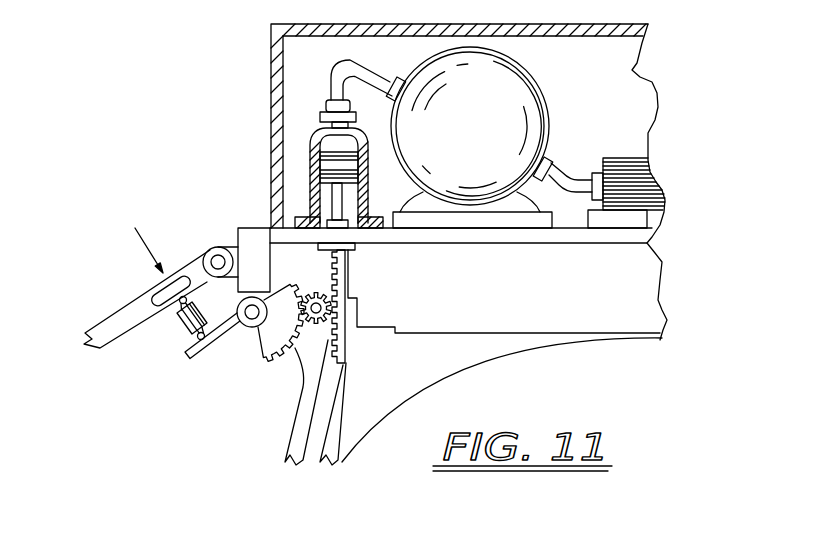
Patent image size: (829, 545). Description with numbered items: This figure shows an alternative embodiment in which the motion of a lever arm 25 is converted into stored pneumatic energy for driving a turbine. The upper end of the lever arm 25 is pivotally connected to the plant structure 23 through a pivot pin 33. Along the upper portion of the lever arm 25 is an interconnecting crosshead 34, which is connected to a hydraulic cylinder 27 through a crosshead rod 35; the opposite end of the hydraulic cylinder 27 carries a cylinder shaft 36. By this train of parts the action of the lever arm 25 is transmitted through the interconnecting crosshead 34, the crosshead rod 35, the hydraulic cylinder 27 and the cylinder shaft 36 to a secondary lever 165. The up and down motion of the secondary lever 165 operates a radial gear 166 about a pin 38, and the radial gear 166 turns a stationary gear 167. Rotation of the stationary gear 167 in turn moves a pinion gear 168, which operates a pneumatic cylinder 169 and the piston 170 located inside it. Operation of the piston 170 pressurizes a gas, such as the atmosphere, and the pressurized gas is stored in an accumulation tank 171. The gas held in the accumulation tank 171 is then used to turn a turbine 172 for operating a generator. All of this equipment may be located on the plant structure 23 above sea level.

The plant structure 23 is at (290, 437).
The lever arm 25 is at (110, 316).
The hydraulic cylinder 27 is at (179, 325).
The pivot pin 33 is at (217, 250).
The interconnecting crosshead 34 is at (140, 239).
The crosshead rod 35 is at (188, 300).
The cylinder shaft 36 is at (196, 338).
The pin 38 is at (250, 320).
The secondary lever 165 is at (220, 344).
The radial gear 166 is at (282, 358).
The stationary gear 167 is at (315, 295).
The pinion gear 168 is at (343, 277).
The pneumatic cylinder 169 is at (310, 141).
The piston 170 is at (325, 166).
The accumulation tank 171 is at (527, 72).
The turbine 172 is at (620, 158).